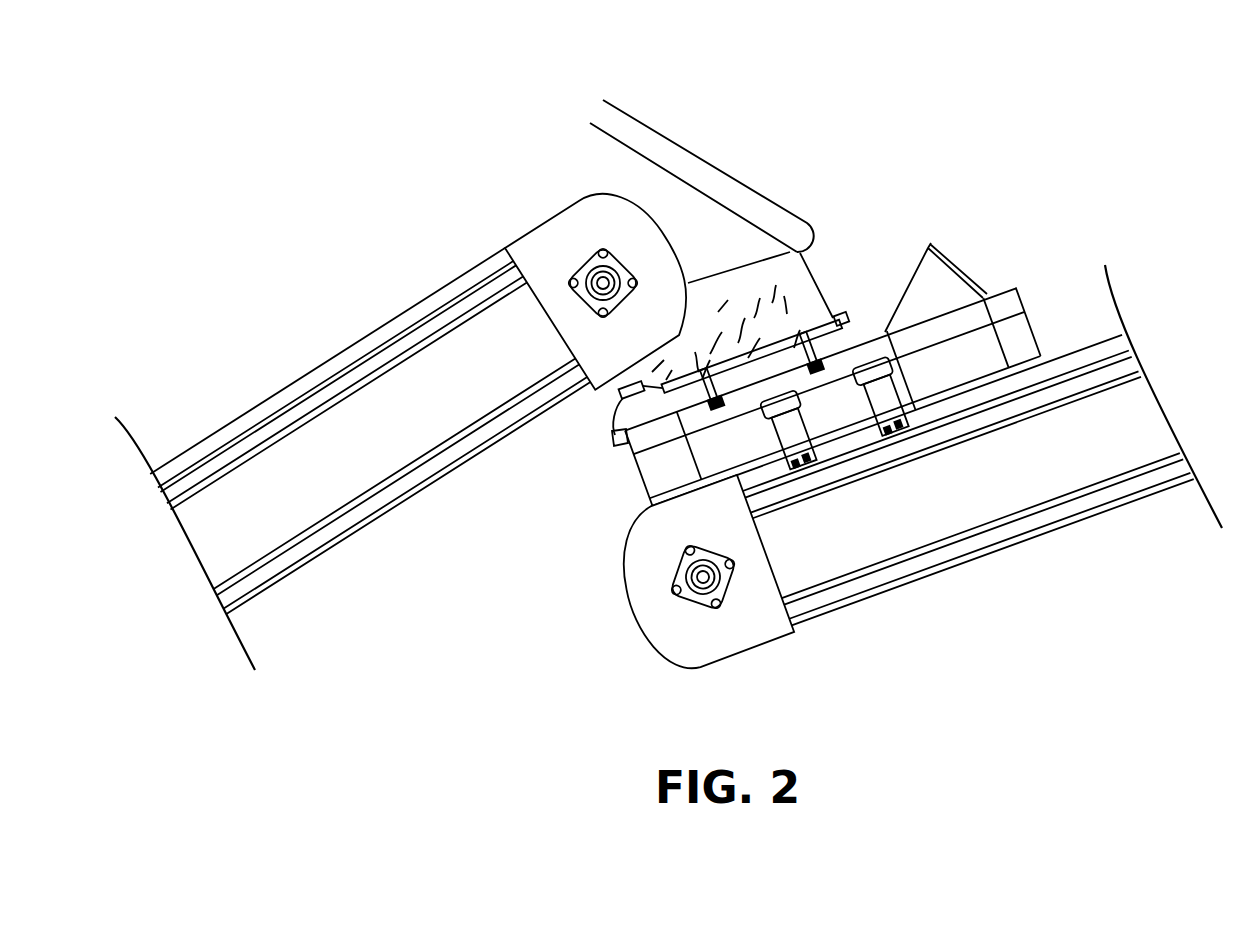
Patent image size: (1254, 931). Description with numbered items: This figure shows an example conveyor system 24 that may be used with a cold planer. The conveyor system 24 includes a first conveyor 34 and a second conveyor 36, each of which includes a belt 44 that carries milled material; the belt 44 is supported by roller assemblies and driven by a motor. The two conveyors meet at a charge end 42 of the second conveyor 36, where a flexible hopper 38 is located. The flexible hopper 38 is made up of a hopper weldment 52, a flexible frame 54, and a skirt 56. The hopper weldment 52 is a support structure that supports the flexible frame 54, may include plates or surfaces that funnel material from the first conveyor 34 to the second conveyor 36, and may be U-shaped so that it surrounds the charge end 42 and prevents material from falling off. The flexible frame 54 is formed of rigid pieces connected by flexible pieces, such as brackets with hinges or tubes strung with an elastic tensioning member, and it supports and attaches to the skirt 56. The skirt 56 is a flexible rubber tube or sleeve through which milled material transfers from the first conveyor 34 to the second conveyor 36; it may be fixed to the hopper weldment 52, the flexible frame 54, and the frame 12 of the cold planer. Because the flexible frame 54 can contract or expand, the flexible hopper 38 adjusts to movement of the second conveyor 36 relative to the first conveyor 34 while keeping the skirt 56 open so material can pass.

The conveyor system 24 is at (228, 111).
The frame 12 is at (697, 168).
The first conveyor 34 is at (386, 531).
The second conveyor 36 is at (987, 563).
The flexible hopper 38 is at (529, 477).
The charge end 42 is at (803, 625).
The belt 44 is at (393, 322).
The hopper weldment 52 is at (985, 310).
The flexible frame 54 is at (828, 318).
The skirt 56 is at (800, 257).